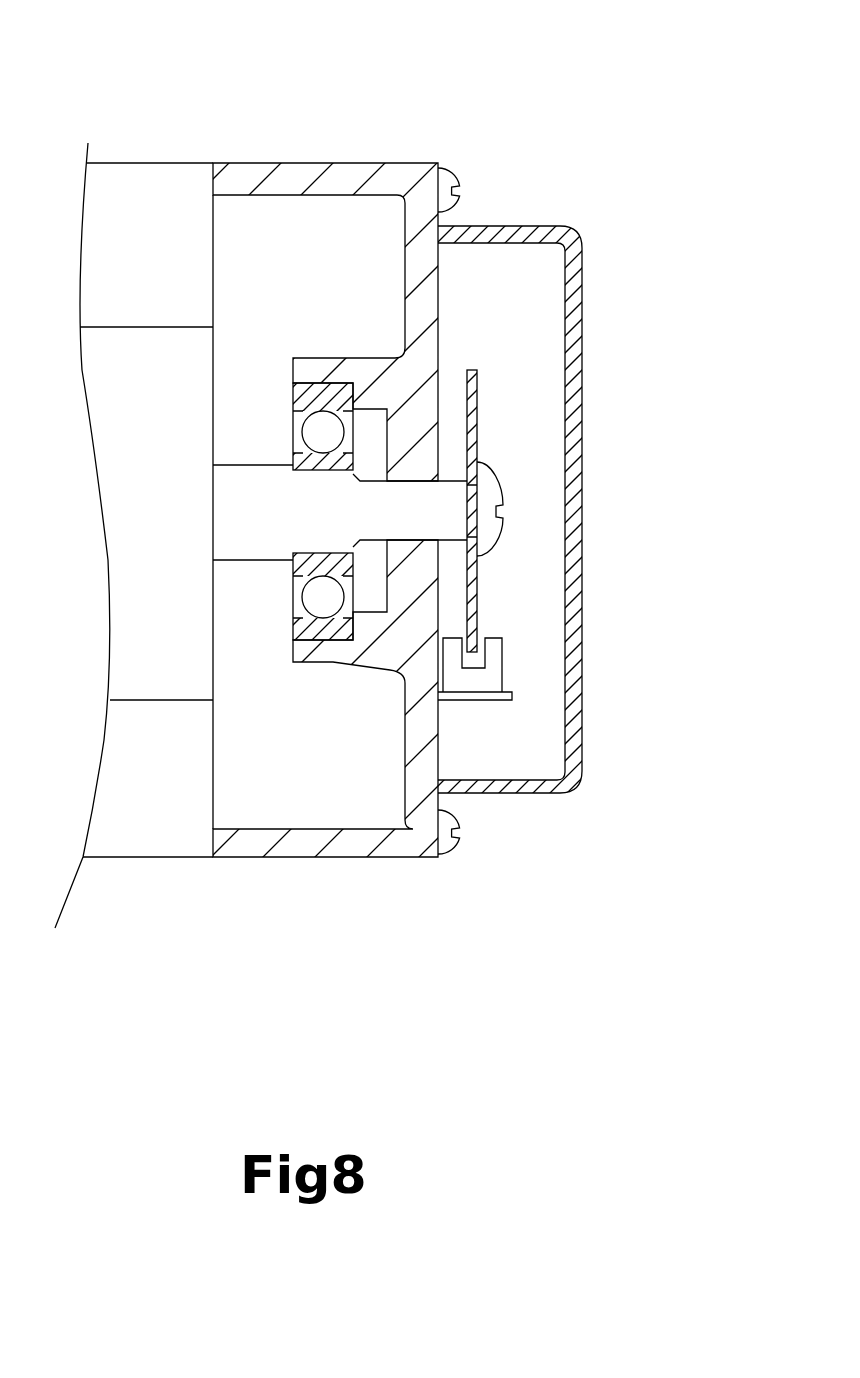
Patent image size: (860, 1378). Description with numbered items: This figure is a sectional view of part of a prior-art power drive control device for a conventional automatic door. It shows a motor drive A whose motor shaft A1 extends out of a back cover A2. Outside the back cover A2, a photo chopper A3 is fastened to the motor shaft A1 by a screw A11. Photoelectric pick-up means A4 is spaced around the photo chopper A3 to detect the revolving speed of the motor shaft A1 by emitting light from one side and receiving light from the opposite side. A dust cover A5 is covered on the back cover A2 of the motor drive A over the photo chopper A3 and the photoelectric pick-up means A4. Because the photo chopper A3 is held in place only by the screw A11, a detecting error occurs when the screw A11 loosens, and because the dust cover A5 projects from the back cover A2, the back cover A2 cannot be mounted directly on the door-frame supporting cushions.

The motor drive A is at (430, 689).
The motor shaft A1 is at (250, 482).
The back cover A2 is at (370, 163).
The photo chopper A3 is at (480, 385).
The photoelectric pick-up means A4 is at (493, 665).
The dust cover A5 is at (582, 502).
The screw A11 is at (476, 556).